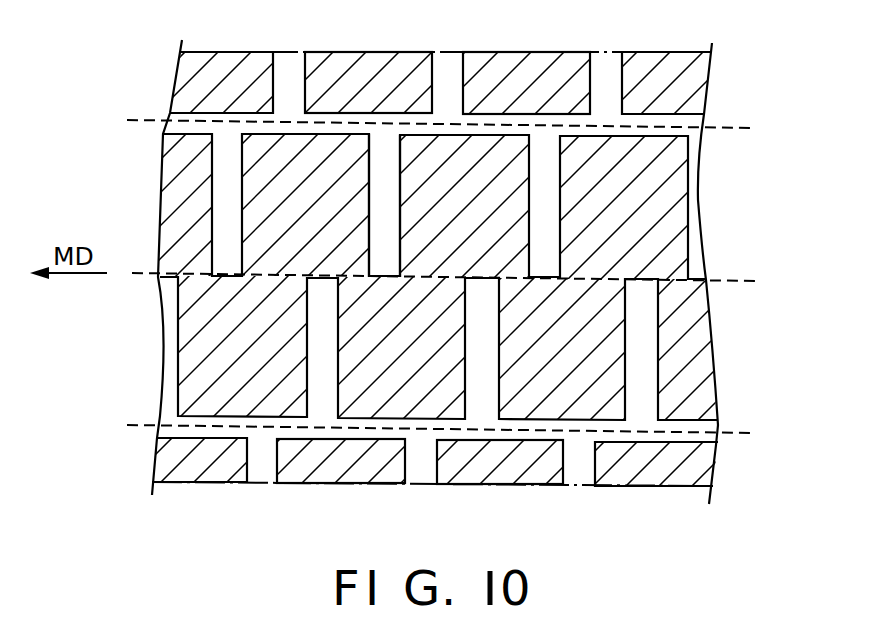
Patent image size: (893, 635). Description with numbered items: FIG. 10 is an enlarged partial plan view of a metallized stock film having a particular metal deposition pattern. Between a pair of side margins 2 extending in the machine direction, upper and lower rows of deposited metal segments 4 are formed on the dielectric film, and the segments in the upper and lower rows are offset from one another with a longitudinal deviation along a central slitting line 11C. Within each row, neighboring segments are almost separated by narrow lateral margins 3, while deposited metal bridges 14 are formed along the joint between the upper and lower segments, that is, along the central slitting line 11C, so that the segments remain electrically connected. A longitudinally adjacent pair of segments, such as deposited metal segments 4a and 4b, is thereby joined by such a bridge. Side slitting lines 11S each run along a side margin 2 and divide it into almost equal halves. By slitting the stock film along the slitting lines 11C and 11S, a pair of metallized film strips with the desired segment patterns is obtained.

The side margin 2 is at (446, 270).
The lateral margin 3 is at (396, 193).
The deposited metal segment 4 is at (446, 270).
The deposited metal segment 4a is at (277, 365).
The deposited metal segment 4b is at (328, 218).
The deposited metal bridge 14 is at (353, 278).
The side slitting line 11S is at (790, 443).
The central slitting line 11C is at (778, 272).